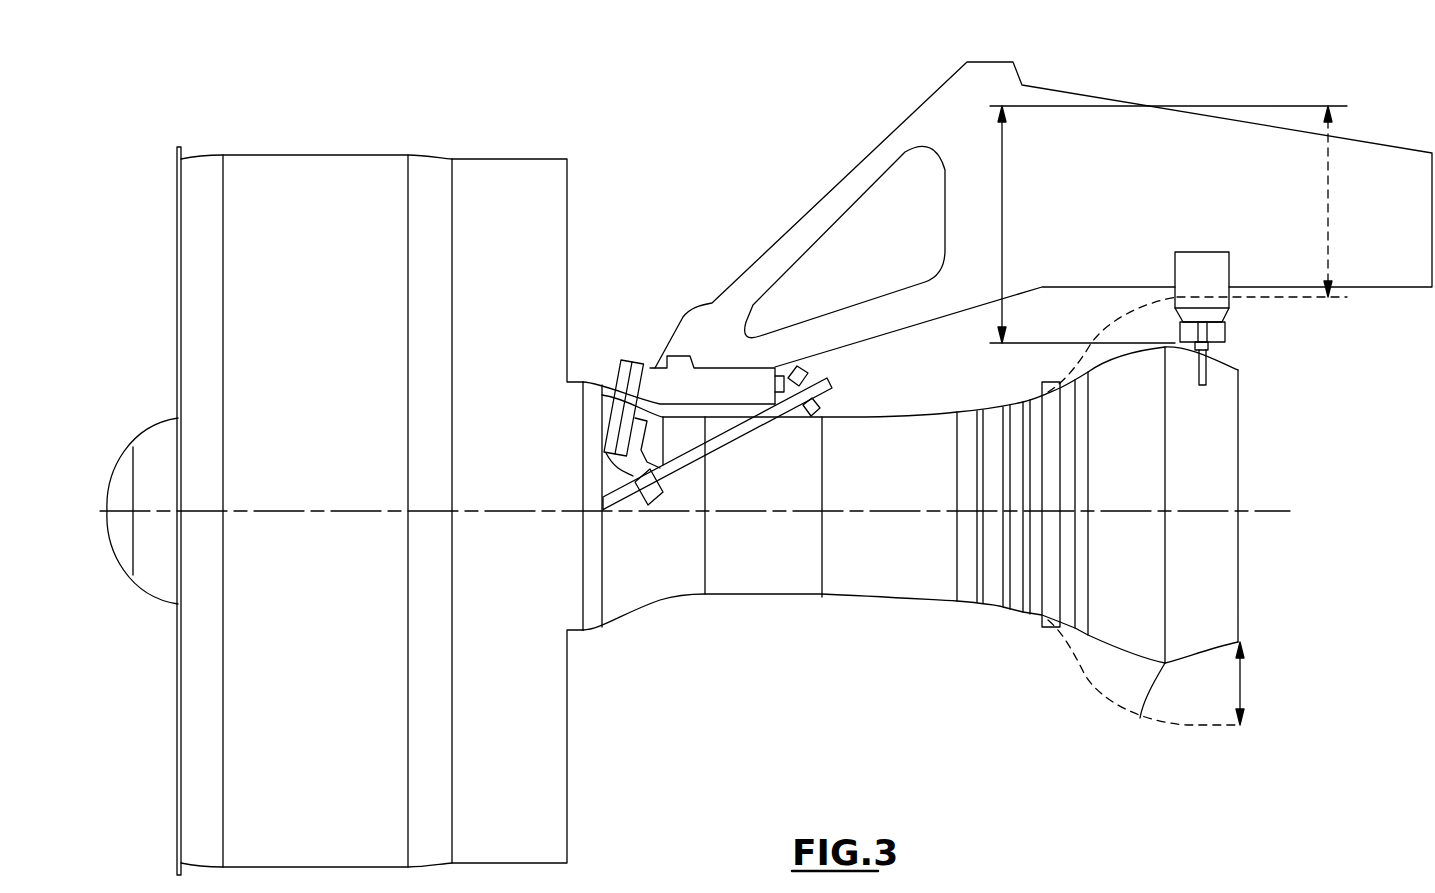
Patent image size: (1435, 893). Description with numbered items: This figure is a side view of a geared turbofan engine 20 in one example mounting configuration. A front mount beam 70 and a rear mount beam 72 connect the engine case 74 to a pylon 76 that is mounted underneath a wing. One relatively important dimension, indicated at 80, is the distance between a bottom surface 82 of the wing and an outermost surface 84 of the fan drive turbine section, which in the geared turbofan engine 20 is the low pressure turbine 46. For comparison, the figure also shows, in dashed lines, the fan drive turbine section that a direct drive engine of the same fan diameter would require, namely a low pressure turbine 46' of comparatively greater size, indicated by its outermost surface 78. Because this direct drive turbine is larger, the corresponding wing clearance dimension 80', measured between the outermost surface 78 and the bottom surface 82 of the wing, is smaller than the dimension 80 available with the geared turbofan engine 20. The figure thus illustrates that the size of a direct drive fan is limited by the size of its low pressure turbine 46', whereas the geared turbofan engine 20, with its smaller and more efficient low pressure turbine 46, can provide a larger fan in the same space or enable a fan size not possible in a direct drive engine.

The geared turbofan engine 20 is at (918, 675).
The low pressure turbine 46 is at (1131, 705).
The low pressure turbine 46' is at (1281, 683).
The front mount beam 70 is at (650, 368).
The rear mount beam 72 is at (1210, 283).
The engine case 74 is at (988, 603).
The pylon 76 is at (1128, 148).
The outermost surface 78 is at (1183, 727).
The dimension 80 is at (1082, 224).
The wing clearance dimension 80' is at (1290, 201).
The bottom surface 82 is at (1273, 106).
The outermost surface 84 is at (1167, 350).